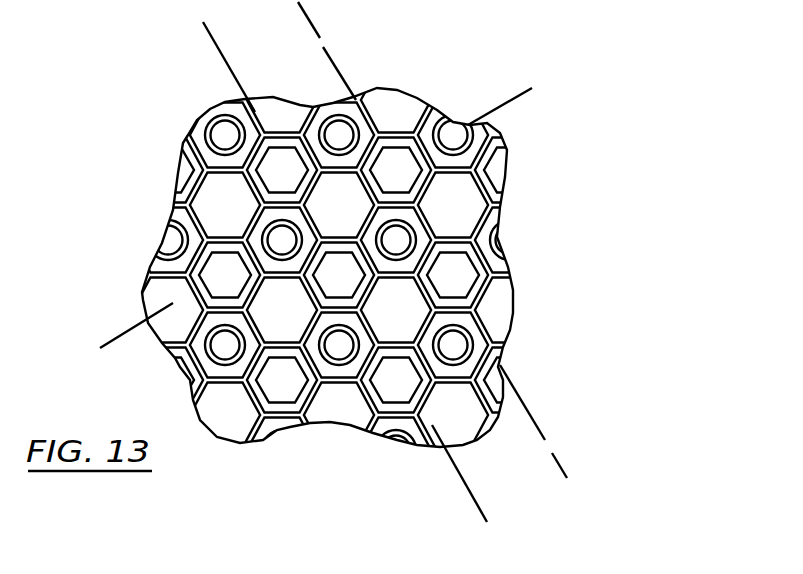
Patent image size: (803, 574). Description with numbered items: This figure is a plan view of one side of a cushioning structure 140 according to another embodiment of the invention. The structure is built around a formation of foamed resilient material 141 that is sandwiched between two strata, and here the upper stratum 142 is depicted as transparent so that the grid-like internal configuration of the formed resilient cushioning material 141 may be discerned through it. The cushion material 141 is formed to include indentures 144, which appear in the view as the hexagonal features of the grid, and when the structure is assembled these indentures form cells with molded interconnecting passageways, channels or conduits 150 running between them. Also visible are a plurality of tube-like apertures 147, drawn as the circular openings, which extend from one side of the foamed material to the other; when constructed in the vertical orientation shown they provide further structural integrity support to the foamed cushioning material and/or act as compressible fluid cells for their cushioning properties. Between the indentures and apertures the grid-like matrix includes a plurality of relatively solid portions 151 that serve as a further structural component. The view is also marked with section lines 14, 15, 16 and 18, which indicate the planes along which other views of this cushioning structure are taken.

The cushioning structure 140 is at (532, 217).
The foamed resilient material 141 is at (188, 160).
The upper stratum 142 is at (493, 320).
The indentures 144 is at (227, 275).
The tube-like apertures 147 is at (277, 437).
The interconnecting passageways 150 is at (423, 237).
The solid portions 151 is at (342, 198).
The section line 14- 14 is at (532, 143).
The section line 15- 15 is at (310, 90).
The section line 16- 16 is at (202, 42).
The section line 18- 18 is at (283, 42).